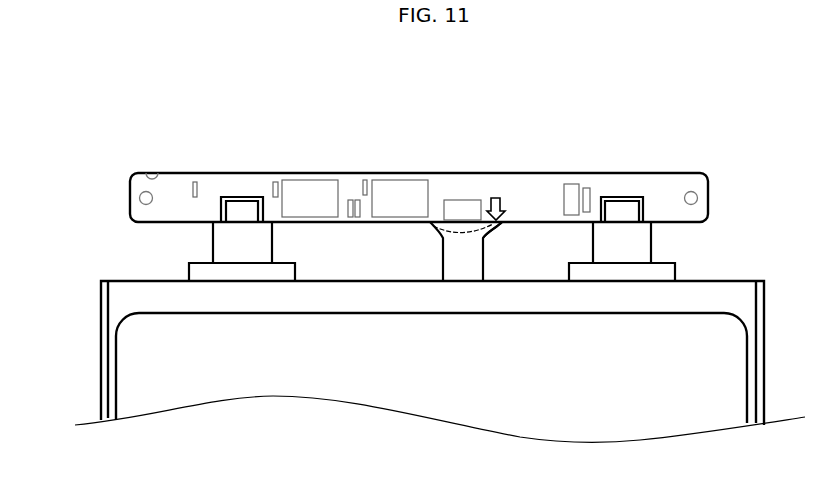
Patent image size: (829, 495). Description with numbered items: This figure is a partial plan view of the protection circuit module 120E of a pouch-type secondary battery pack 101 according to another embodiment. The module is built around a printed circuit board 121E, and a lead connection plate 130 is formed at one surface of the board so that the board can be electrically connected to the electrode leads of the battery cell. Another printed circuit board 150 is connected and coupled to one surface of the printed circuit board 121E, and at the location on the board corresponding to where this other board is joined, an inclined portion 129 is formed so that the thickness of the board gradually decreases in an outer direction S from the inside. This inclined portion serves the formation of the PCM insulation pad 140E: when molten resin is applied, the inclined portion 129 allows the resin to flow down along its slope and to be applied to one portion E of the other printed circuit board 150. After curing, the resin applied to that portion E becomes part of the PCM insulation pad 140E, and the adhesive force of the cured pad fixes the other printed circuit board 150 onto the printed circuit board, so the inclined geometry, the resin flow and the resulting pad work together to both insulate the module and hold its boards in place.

The secondary battery pack 101 is at (206, 86).
The protection circuit module 120E is at (110, 190).
The PCM insulation pad 140E is at (173, 185).
The lead connection plate 130 is at (240, 210).
The inclined portion 129 is at (462, 210).
The printed circuit board 121E is at (641, 200).
The another printed circuit board 150 is at (443, 253).
The outer direction S is at (498, 197).
The one portion of another printed circuit board E is at (490, 225).